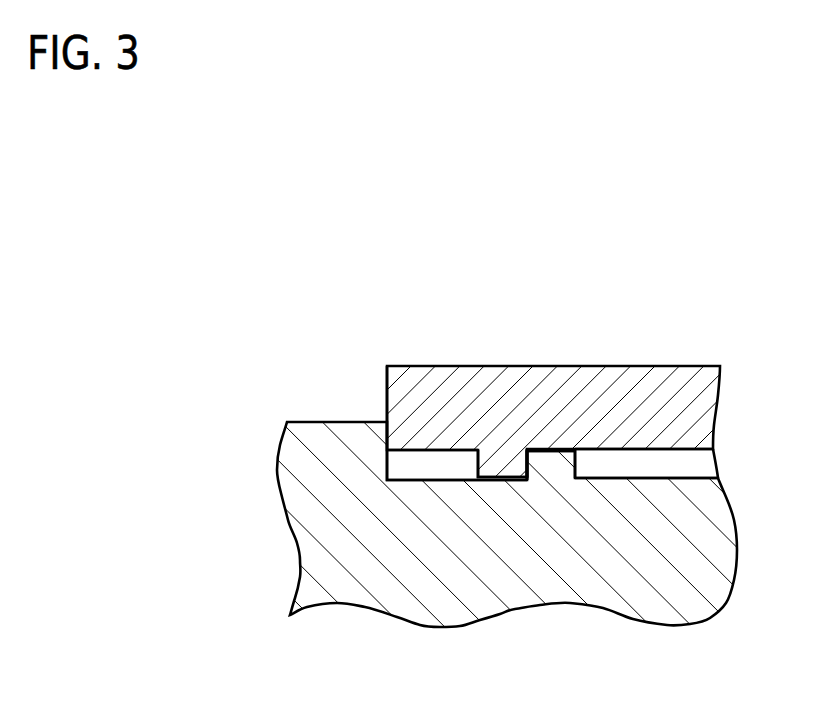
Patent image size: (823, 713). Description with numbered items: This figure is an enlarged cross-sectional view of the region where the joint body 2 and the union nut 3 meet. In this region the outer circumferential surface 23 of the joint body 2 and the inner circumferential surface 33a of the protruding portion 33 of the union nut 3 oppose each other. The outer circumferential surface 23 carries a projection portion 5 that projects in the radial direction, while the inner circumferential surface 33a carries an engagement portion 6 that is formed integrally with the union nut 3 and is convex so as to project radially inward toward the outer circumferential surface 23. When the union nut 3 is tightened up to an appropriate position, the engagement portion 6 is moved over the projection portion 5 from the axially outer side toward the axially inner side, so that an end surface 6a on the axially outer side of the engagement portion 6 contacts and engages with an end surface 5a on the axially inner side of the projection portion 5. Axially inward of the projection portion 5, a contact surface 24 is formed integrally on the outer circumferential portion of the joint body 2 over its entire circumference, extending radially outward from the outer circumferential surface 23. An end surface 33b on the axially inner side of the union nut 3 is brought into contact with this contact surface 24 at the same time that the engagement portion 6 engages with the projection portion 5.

The joint body 2 is at (417, 505).
The union nut 3 is at (550, 365).
The projection portion 5 is at (560, 577).
The end surface of the projection portion 5a is at (527, 461).
The engagement portion 6 is at (491, 358).
The end surface of the engagement portion 6a is at (531, 386).
The outer circumferential surface 23 is at (632, 478).
The contact surface 24 is at (389, 470).
The protruding portion 33 is at (640, 375).
The inner circumferential surface 33a is at (665, 447).
The end surface of the union nut 33b is at (387, 388).